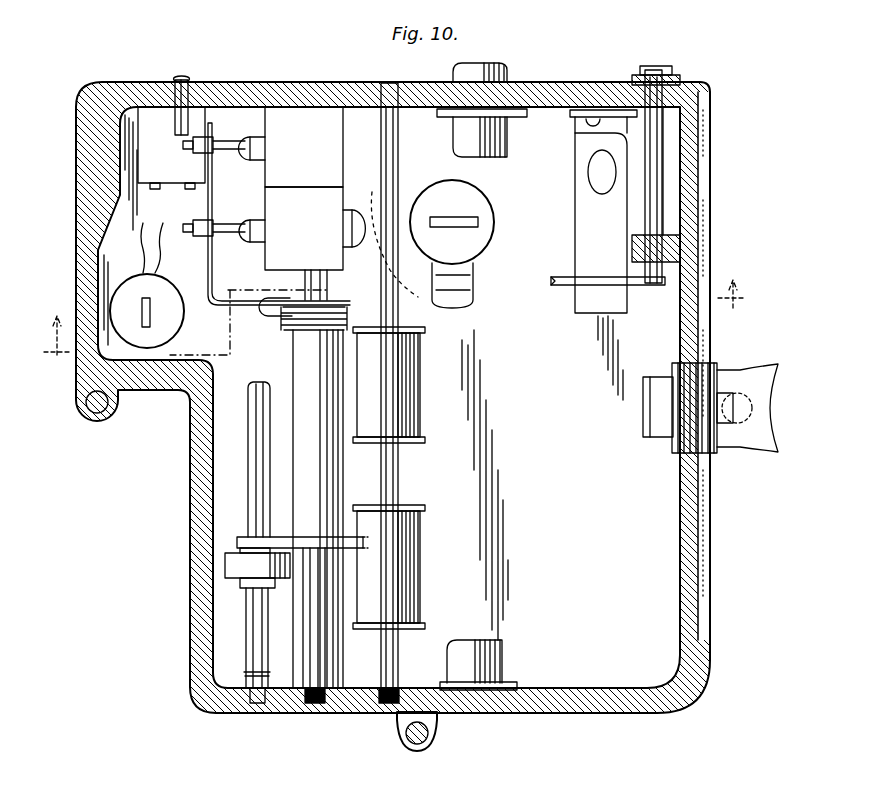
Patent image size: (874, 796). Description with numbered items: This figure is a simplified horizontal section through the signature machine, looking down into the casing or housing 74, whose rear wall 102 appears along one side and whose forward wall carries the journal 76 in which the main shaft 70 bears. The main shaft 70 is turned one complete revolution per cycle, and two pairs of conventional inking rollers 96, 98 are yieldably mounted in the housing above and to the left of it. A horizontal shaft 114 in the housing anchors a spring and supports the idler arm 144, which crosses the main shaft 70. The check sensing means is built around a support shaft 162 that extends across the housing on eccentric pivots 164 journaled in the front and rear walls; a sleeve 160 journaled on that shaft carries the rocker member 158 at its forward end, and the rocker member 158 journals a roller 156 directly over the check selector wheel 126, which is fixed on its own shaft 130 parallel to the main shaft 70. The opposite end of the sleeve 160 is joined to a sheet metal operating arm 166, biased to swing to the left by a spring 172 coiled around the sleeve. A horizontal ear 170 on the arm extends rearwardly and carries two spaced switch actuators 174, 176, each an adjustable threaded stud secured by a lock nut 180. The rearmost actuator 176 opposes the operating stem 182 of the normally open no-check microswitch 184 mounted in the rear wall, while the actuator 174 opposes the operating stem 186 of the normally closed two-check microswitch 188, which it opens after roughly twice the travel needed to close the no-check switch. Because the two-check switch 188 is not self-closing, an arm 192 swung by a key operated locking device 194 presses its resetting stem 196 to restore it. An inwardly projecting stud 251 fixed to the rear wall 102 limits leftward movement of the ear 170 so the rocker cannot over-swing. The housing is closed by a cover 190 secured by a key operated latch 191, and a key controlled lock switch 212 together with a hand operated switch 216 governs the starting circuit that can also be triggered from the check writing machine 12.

The rear wall 102 is at (245, 76).
The no-check microswitch 184 is at (310, 130).
The casing or housing 74 is at (520, 110).
The main shaft 70 is at (475, 140).
The hand operated switch 216 is at (598, 173).
The horizontal shaft 114 is at (652, 188).
The switch actuator 176 is at (225, 141).
The stud 251 is at (180, 128).
The operating stem 182 is at (265, 160).
The horizontal ear 170 is at (228, 195).
The operating stem 186 is at (257, 215).
The key operated locking device 194 is at (475, 228).
The arm 192 is at (468, 282).
The lock nut 180 is at (205, 242).
The switch actuator 174 is at (228, 240).
The two-check microswitch 188 is at (297, 255).
The resetting stem 196 is at (375, 192).
The idler arm 144 is at (568, 287).
The check writing machine 12 is at (399, 332).
The operating arm 166 is at (228, 318).
The spring 172 is at (290, 330).
The key controlled lock switch 212 is at (150, 340).
The inking rollers 98 is at (418, 390).
The sleeve 160 is at (328, 487).
The key operated latch 191 is at (675, 440).
The rocker member 158 is at (310, 543).
The roller 156 is at (232, 570).
The check selector wheel 126 is at (272, 588).
The inking rollers 96 is at (418, 578).
The shaft 130 is at (255, 665).
The support shaft 162 is at (318, 650).
The eccentric pivots 164 is at (315, 705).
The journal 76 is at (470, 690).
The cover 190 is at (700, 560).